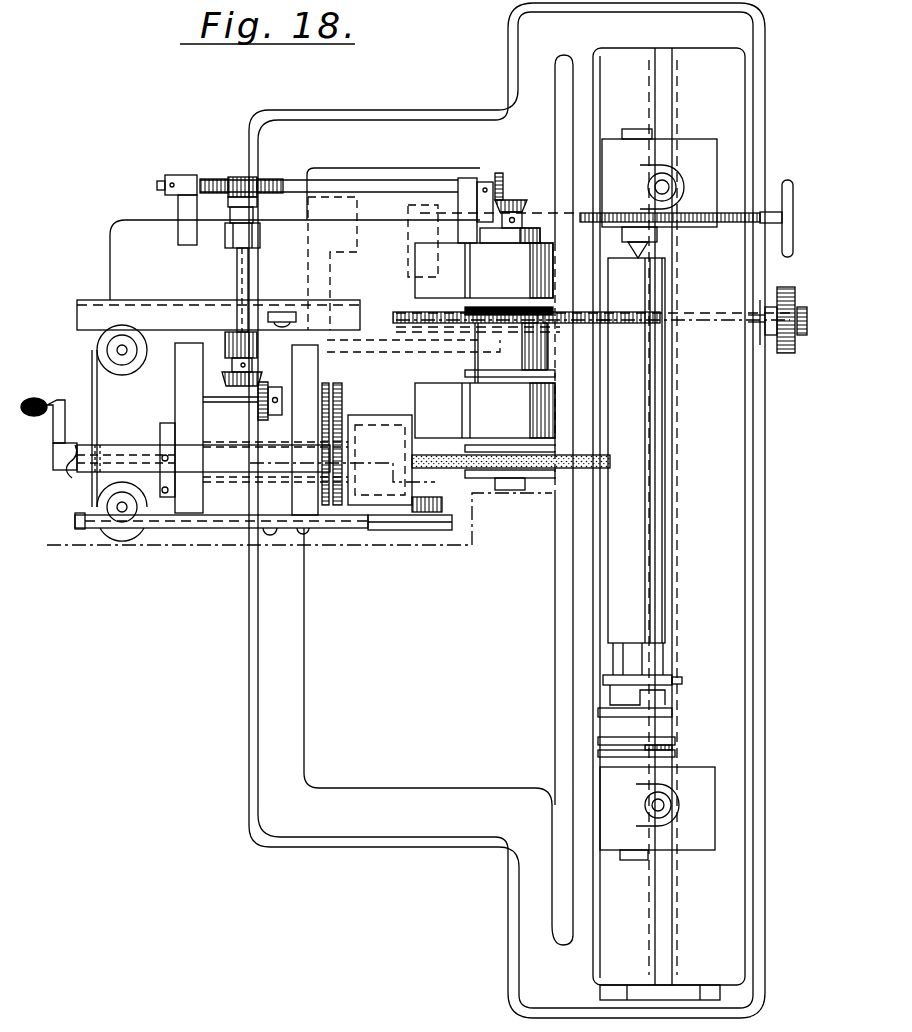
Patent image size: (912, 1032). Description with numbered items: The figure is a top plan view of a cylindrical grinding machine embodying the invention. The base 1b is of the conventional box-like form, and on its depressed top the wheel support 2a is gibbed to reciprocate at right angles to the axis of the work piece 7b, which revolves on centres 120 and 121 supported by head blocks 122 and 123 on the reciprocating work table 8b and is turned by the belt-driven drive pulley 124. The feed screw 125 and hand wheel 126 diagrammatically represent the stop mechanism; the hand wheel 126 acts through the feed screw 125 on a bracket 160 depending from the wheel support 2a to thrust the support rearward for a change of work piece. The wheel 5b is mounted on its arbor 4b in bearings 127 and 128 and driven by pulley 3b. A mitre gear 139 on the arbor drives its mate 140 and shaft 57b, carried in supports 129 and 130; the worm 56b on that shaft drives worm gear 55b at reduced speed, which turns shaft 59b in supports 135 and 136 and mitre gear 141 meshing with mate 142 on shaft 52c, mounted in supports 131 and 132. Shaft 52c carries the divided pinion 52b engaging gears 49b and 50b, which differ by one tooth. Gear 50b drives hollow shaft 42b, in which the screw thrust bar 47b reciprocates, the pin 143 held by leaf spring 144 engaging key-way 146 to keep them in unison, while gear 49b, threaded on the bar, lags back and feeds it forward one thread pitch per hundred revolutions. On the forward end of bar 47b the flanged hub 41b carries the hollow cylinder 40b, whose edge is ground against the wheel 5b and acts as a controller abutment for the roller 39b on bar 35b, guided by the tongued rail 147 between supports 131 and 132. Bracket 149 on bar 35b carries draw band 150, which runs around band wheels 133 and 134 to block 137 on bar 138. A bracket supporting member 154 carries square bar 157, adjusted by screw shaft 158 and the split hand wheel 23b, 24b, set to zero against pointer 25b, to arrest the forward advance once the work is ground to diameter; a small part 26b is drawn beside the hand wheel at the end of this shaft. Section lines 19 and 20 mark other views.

The base 1b is at (444, 693).
The wheel support 2a is at (130, 228).
The pulley 3b is at (465, 373).
The wheel arbor 4b is at (413, 356).
The wheel 5b is at (562, 470).
The work piece 7b is at (666, 583).
The work table 8b is at (669, 524).
The section line 19 is at (795, 352).
The section line 20 is at (56, 462).
The split hand wheel 23b is at (777, 345).
The split hand wheel 24b is at (793, 352).
The pointer 25b is at (766, 325).
The knob 26b is at (801, 307).
The bar 35b is at (413, 531).
The roller 39b is at (442, 505).
The hollow cylinder 40b is at (398, 424).
The flanged hub 41b is at (352, 437).
The hollow shaft 42b is at (275, 474).
The screw thrust bar 47b is at (120, 448).
The gear 49b is at (338, 506).
The gear 50b is at (326, 506).
The divided pinion 52b is at (328, 395).
The shaft 52c is at (205, 399).
The worm gear 55b is at (280, 180).
The worm 56b is at (240, 178).
The shaft 57b is at (362, 180).
The shaft 59b is at (248, 270).
The centre 120 is at (655, 697).
The centre 121 is at (650, 252).
The head block 122 is at (657, 813).
The head block 123 is at (659, 185).
The drive pulley 124 is at (606, 747).
The feed screw 125 is at (785, 205).
The hand wheel 126 is at (782, 240).
The bearing 127 is at (484, 305).
The bearing 128 is at (485, 410).
The support 129 is at (468, 178).
The support 130 is at (190, 176).
The support member 131 is at (188, 343).
The support member 132 is at (312, 345).
The band wheel 133 is at (97, 507).
The band wheel 134 is at (98, 350).
The support 135 is at (240, 333).
The support 136 is at (260, 237).
The block 137 is at (284, 314).
The bar 138 is at (80, 300).
The mitre gear 139 is at (522, 205).
The mitre gear 140 is at (500, 185).
The mitre gear 141 is at (255, 382).
The mitre gear 142 is at (281, 416).
The pin 143 is at (170, 458).
The leaf spring 144 is at (170, 490).
The key-way 146 is at (85, 480).
The tongued rail 147 is at (235, 530).
The bracket 149 is at (304, 530).
The draw band 150 is at (172, 530).
The bracket supporting member 154 is at (565, 360).
The square bar 157 is at (575, 325).
The screw shaft 158 is at (600, 320).
The bracket 160 is at (373, 263).